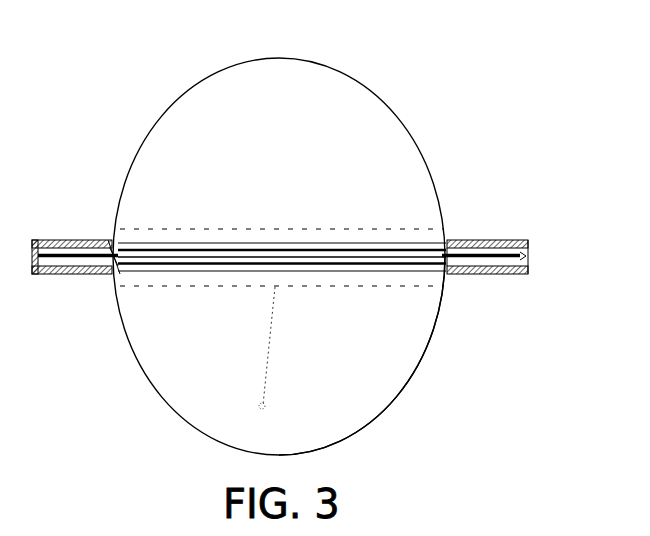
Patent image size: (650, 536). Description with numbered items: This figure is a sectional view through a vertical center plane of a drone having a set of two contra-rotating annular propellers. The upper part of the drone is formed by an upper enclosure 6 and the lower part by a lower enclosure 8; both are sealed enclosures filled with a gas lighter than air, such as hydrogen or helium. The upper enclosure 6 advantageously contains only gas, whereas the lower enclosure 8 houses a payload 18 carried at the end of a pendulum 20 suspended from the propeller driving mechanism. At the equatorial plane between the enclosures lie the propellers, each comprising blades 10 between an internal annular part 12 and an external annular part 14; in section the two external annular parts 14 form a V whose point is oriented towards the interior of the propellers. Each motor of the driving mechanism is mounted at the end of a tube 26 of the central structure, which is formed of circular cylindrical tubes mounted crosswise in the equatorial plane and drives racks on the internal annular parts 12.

The upper enclosure 6 is at (337, 70).
The lower enclosure 8 is at (382, 412).
The blades 10 is at (470, 247).
The internal annular part 12 is at (117, 244).
The external annular part 14 is at (518, 263).
The payload 18 is at (263, 405).
The pendulum 20 is at (272, 340).
The tube 26 is at (337, 263).